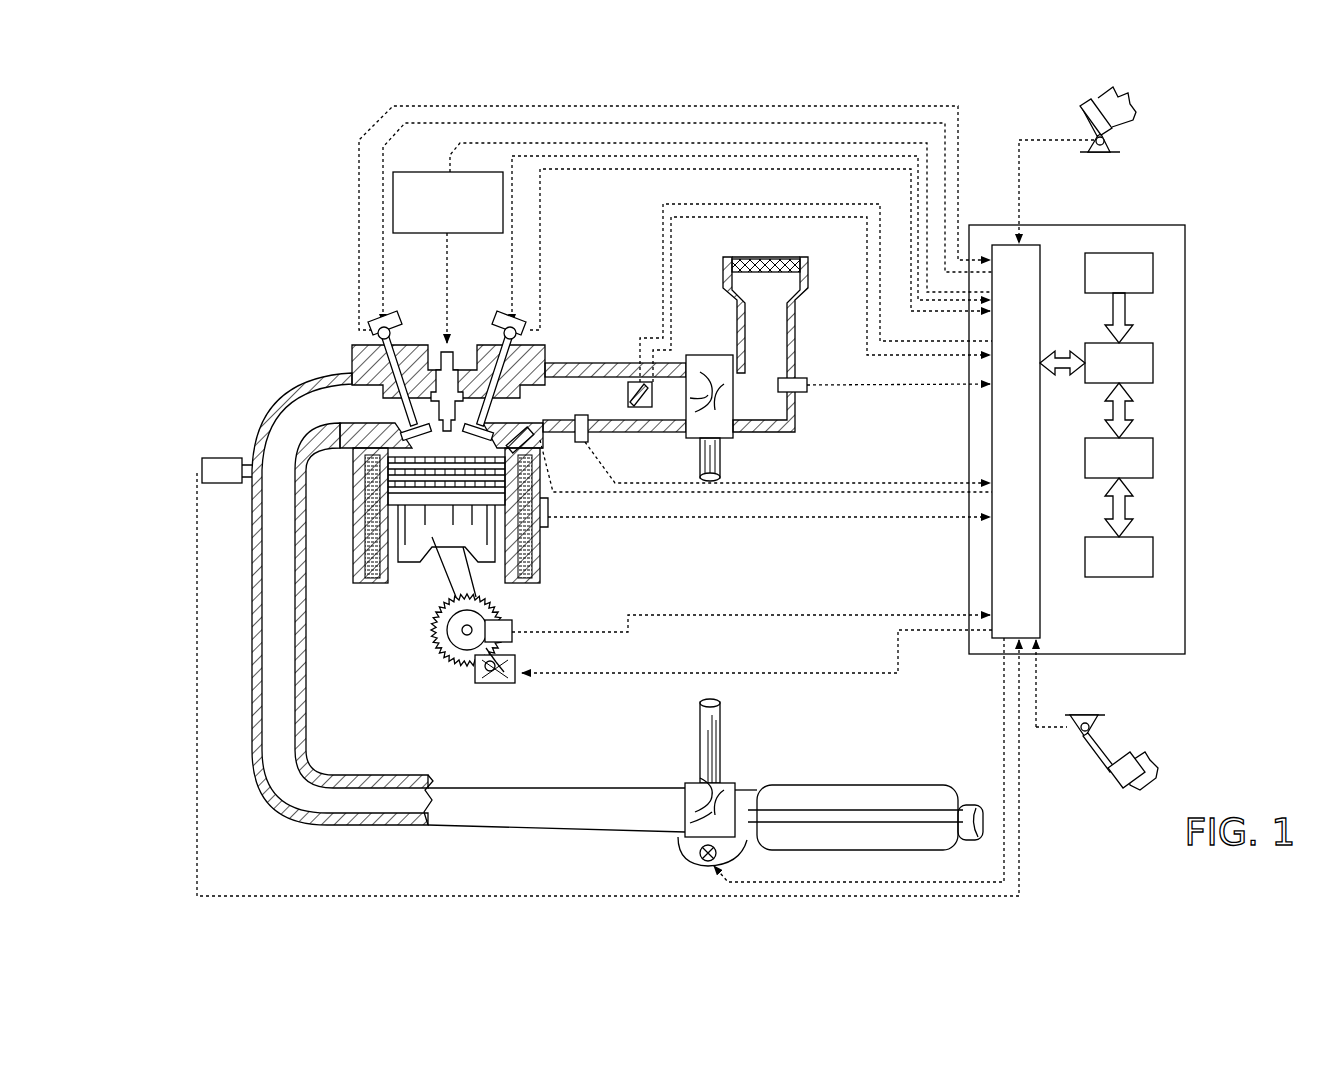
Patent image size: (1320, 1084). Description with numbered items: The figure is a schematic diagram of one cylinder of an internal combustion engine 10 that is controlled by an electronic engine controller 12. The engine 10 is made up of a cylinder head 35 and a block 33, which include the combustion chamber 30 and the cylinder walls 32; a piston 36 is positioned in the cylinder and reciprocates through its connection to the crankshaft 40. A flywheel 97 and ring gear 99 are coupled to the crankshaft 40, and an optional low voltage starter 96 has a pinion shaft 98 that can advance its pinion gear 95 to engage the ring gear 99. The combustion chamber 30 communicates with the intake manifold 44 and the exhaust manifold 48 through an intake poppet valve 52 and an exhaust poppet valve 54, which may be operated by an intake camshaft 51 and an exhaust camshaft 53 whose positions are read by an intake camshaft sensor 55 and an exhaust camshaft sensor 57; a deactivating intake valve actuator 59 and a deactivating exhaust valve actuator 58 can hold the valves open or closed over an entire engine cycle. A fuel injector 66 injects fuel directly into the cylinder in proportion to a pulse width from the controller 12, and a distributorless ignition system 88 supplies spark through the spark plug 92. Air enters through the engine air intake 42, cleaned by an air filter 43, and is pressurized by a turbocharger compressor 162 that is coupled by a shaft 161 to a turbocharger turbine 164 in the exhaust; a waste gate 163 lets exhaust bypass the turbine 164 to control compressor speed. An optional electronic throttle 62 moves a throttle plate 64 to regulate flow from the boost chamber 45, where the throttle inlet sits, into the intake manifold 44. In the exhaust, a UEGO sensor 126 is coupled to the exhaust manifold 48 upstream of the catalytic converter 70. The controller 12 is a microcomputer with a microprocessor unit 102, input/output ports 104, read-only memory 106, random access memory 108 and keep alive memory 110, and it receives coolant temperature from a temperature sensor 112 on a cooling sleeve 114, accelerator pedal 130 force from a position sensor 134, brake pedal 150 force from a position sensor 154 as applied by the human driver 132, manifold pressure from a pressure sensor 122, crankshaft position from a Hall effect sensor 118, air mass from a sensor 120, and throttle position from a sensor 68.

The internal combustion engine 10 is at (297, 306).
The electronic engine controller 12 is at (1175, 225).
The combustion chamber 30 is at (445, 447).
The cylinder walls 32 is at (390, 575).
The block 33 is at (351, 478).
The cylinder head 35 is at (345, 343).
The piston 36 is at (432, 540).
The crankshaft 40 is at (458, 657).
The engine air intake 42 is at (812, 272).
The air filter 43 is at (783, 270).
The intake manifold 44 is at (547, 409).
The boost chamber 45 is at (655, 411).
The exhaust manifold 48 is at (310, 416).
The intake camshaft 51 is at (512, 320).
The intake poppet valve 52 is at (487, 400).
The exhaust camshaft 53 is at (380, 320).
The exhaust poppet valve 54 is at (358, 382).
The intake camshaft sensor 55 is at (517, 328).
The exhaust camshaft sensor 57 is at (372, 328).
The deactivating exhaust valve actuator 58 is at (392, 330).
The deactivating intake valve actuator 59 is at (503, 345).
The electronic throttle 62 is at (628, 395).
The throttle plate 64 is at (633, 410).
The fuel injector 66 is at (505, 445).
The throttle position sensor 68 is at (648, 382).
The catalytic converter 70 is at (795, 785).
The distributorless ignition system 88 is at (405, 172).
The spark plug 92 is at (452, 352).
The pinion gear 95 is at (505, 686).
The starter 96 is at (512, 683).
The flywheel 97 is at (445, 627).
The pinion shaft 98 is at (482, 688).
The ring gear 99 is at (465, 670).
The microprocessor unit 102 is at (1153, 363).
The input/output ports 104 is at (1042, 258).
The read-only memory 106 is at (1153, 270).
The random access memory 108 is at (1153, 455).
The keep alive memory 110 is at (1153, 555).
The temperature sensor 112 is at (565, 510).
The cooling sleeve 114 is at (533, 538).
The Hall effect sensor 118 is at (512, 622).
The air mass sensor 120 is at (803, 382).
The pressure sensor 122 is at (572, 446).
The Universal Exhaust Gas Oxygen sensor 126 is at (202, 465).
The accelerator pedal 130 is at (1085, 118).
The human driver 132 is at (1125, 108).
The position sensor 134 is at (1110, 143).
The brake pedal 150 is at (1100, 775).
The position sensor 154 is at (1078, 730).
The shaft 161 is at (722, 448).
The turbocharger compressor 162 is at (748, 425).
The waste gate 163 is at (705, 860).
The turbocharger turbine 164 is at (690, 783).